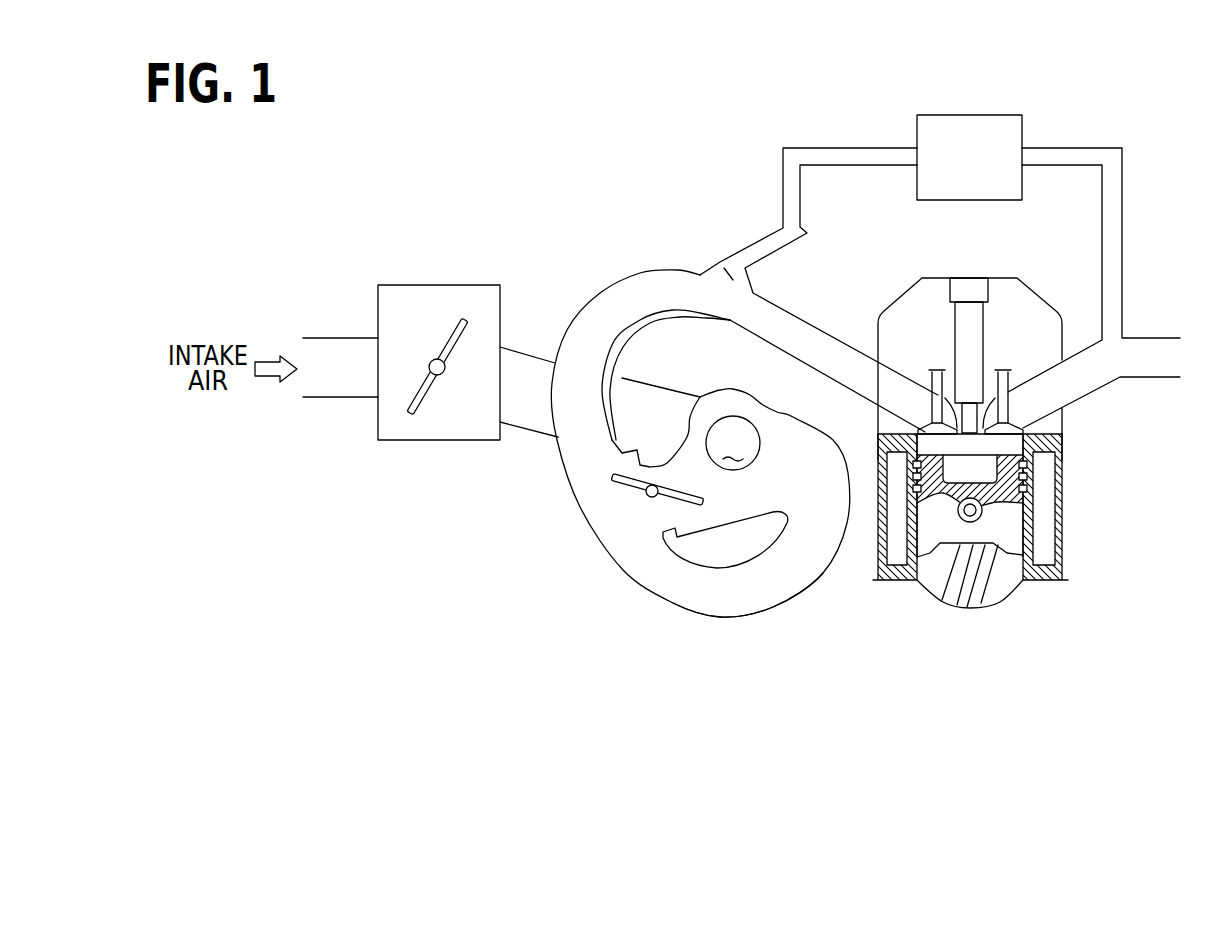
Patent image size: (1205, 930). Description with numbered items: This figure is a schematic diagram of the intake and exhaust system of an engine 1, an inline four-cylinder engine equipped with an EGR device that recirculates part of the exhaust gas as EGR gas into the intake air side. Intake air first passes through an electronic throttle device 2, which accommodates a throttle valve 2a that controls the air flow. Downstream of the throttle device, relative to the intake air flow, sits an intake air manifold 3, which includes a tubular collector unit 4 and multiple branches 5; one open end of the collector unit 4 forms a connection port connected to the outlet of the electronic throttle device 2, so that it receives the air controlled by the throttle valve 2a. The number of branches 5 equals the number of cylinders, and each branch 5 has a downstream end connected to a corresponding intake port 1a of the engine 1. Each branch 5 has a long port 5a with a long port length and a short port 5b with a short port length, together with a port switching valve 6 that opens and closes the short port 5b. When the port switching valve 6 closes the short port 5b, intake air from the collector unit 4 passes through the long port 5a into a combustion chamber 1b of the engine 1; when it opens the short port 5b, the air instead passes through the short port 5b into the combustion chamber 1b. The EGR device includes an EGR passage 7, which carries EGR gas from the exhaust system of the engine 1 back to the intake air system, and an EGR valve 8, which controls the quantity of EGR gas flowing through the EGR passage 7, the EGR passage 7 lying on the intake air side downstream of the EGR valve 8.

The engine 1 is at (983, 467).
The intake port 1a is at (900, 392).
The combustion chamber 1b is at (972, 448).
The electronic throttle device 2 is at (427, 282).
The throttle valve 2a is at (427, 392).
The intake air manifold 3 is at (717, 625).
The collector unit 4 is at (733, 443).
The branch 5 is at (615, 298).
The long port 5a is at (767, 583).
The short port 5b is at (703, 517).
The port switching valve 6 is at (627, 490).
The EGR passage 7 is at (1075, 147).
The EGR valve 8 is at (967, 113).